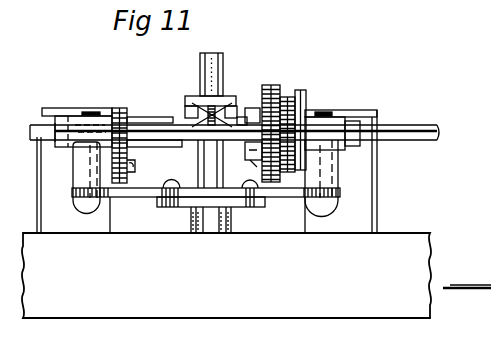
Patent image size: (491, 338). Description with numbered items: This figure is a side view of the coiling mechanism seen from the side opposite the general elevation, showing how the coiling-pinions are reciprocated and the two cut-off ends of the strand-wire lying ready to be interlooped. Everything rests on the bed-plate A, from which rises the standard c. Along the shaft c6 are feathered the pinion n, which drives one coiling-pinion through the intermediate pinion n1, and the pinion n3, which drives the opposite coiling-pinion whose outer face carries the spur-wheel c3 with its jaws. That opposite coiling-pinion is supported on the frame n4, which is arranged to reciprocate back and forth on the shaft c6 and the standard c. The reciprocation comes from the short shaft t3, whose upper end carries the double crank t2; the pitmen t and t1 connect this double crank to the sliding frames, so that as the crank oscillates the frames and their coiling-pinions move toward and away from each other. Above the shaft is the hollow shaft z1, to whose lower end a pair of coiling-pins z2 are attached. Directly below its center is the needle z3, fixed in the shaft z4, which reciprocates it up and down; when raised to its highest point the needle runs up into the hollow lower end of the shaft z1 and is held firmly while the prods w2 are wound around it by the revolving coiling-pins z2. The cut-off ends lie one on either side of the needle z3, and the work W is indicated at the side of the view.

The bed-plate A is at (226, 275).
The standard c is at (207, 170).
The spur-wheel c3 is at (278, 84).
The shaft c6 is at (413, 121).
The pinion n is at (117, 112).
The intermediate pinion n1 is at (133, 171).
The pinion n3 is at (306, 92).
The frame n4 is at (322, 112).
The pitman t is at (128, 191).
The pitman t1 is at (290, 199).
The double crank t2 is at (211, 210).
The short shaft t3 is at (232, 215).
The prods w2 is at (193, 110).
The shaft z1 is at (213, 64).
The coiling-pins z2 is at (175, 95).
The needle z3 is at (232, 96).
The shaft z4 is at (198, 165).
The work plate W is at (467, 277).